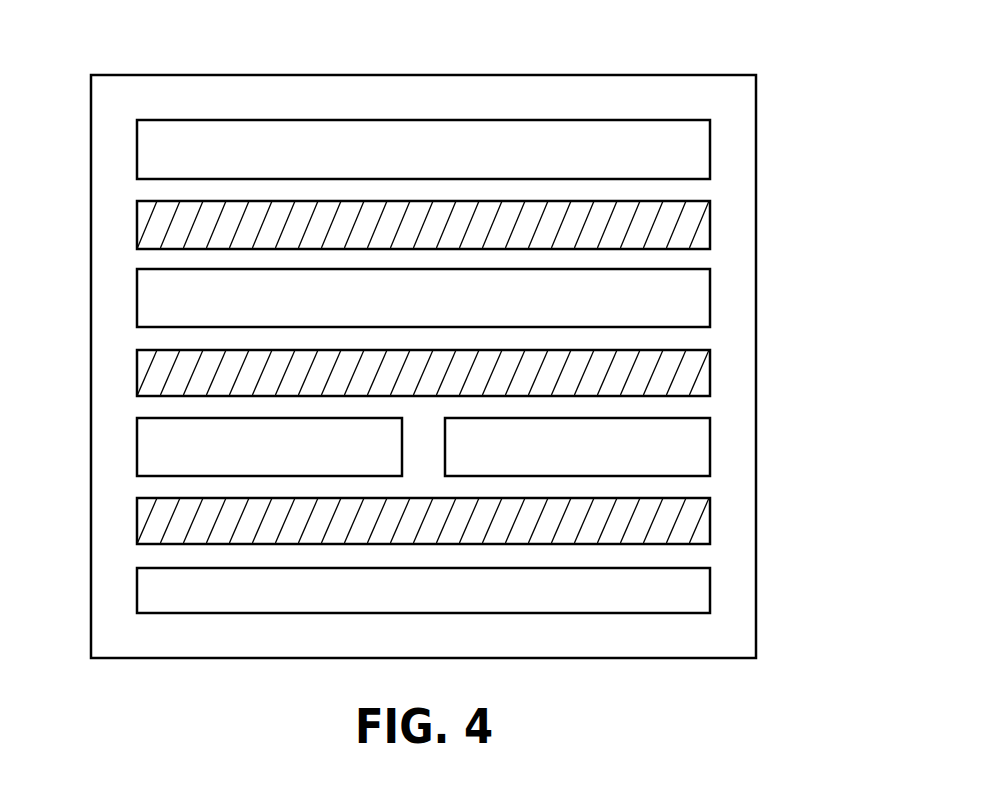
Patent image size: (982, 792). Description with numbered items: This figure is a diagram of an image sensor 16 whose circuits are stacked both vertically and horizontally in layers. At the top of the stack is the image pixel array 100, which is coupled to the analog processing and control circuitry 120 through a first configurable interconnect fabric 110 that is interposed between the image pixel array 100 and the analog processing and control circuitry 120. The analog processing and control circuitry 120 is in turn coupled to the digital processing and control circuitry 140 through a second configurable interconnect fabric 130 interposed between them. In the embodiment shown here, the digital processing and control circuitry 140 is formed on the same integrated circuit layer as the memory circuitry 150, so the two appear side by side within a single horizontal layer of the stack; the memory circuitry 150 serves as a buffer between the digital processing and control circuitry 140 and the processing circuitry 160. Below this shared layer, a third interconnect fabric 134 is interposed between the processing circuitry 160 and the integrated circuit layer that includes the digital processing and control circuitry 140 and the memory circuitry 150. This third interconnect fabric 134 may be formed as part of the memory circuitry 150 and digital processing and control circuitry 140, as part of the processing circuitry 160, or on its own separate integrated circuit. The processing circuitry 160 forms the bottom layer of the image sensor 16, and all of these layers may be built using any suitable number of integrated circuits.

The image sensor 16 is at (240, 82).
The image pixel array 100 is at (703, 150).
The first configurable interconnect fabric 110 is at (703, 223).
The analog processing and control circuitry 120 is at (703, 298).
The second configurable interconnect fabric 130 is at (703, 373).
The digital processing and control circuitry 140 is at (143, 447).
The memory circuitry 150 is at (703, 447).
The third interconnect fabric 134 is at (703, 522).
The processing circuitry 160 is at (703, 590).